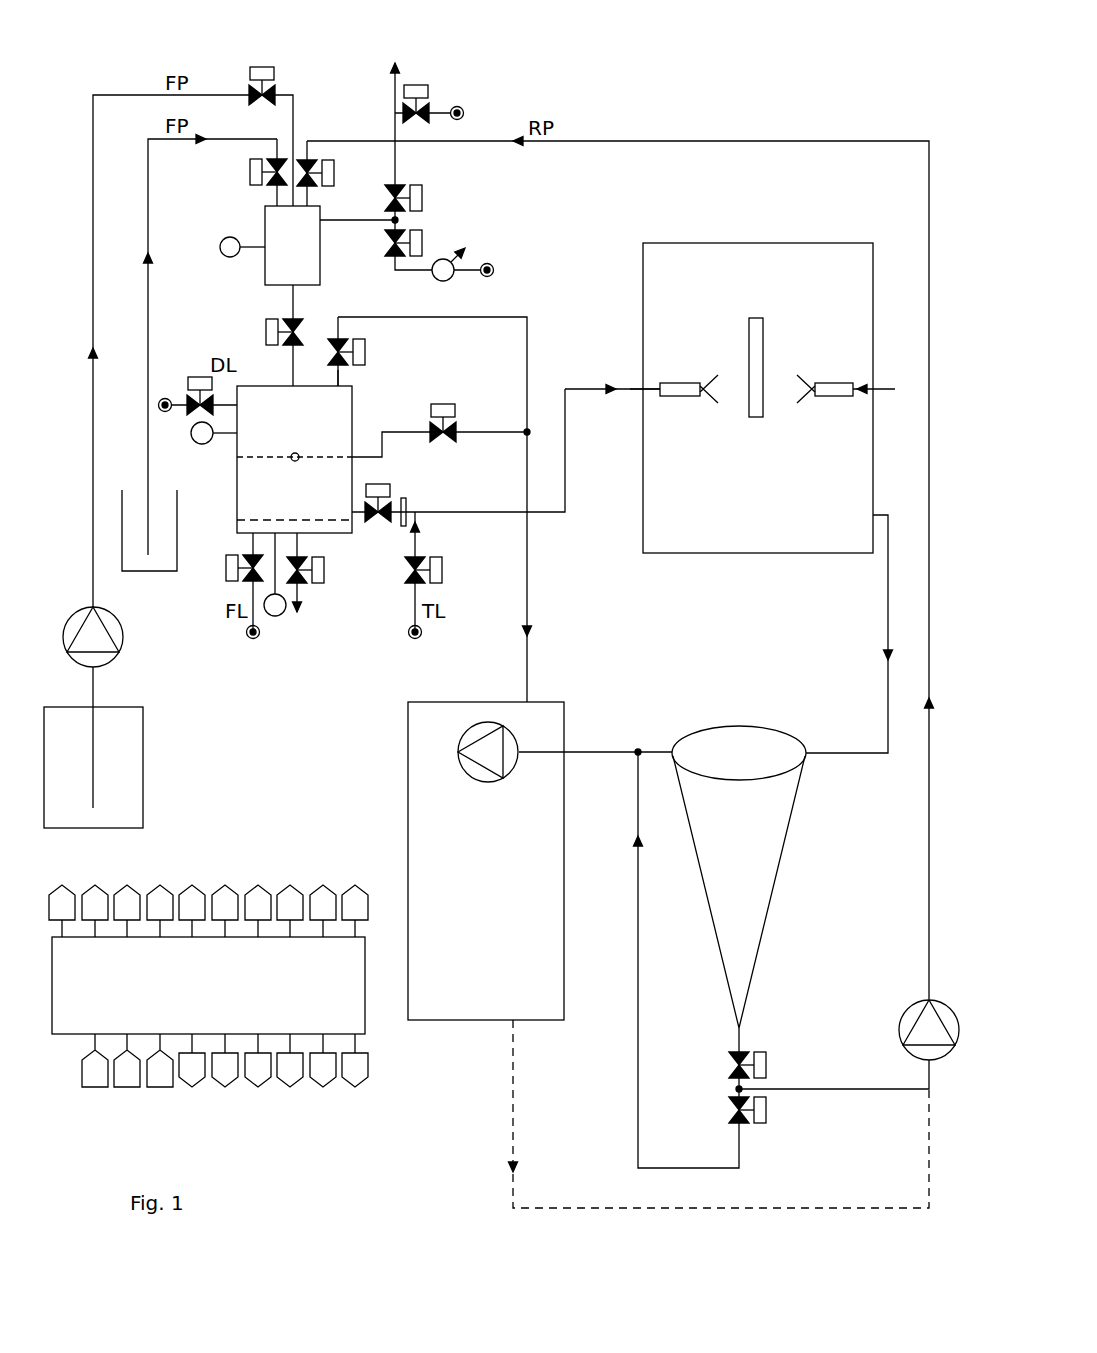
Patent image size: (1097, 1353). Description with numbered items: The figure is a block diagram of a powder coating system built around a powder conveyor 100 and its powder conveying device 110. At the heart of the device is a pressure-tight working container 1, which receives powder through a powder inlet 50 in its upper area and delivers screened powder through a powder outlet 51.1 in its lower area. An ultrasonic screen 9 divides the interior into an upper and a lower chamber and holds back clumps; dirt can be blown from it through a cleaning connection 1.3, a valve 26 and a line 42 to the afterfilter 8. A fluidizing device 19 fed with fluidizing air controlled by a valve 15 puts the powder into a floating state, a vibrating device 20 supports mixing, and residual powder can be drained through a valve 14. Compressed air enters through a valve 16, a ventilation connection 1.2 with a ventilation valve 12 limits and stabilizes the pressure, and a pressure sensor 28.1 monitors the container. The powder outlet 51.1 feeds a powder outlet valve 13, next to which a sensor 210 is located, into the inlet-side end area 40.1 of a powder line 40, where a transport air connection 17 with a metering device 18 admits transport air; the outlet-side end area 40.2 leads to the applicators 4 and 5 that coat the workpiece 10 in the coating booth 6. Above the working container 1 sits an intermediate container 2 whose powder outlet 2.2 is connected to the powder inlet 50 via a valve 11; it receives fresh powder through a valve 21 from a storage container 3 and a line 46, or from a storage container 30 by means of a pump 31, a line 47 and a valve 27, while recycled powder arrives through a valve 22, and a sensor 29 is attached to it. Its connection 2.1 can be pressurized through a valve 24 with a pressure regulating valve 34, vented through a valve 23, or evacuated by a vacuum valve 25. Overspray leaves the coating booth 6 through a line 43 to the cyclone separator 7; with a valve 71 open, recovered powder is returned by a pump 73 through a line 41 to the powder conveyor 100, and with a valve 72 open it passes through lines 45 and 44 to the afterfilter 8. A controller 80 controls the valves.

The working container 1 is at (355, 416).
The ventilation connection 1.2 is at (346, 384).
The cleaning connection 1.3 is at (356, 454).
The intermediate container 2 is at (264, 233).
The connection on the intermediate container 2.1 is at (323, 224).
The powder outlet of the intermediate container 2.2 is at (300, 291).
The storage container 3 is at (164, 574).
The applicator 4 is at (681, 382).
The applicator 5 is at (835, 382).
The coating booth 6 is at (712, 243).
The cyclone separator 7 is at (774, 894).
The afterfilter 8 is at (408, 838).
The ultrasonic screen 9 is at (240, 458).
The workpiece 10 is at (753, 318).
The valve 11 is at (265, 330).
The ventilation valve 12 is at (368, 356).
The outlet valve 13 is at (391, 485).
The valve 14 is at (326, 580).
The valve 15 is at (225, 567).
The valve 16 is at (196, 377).
The transport air connection 17 is at (412, 522).
The metering device for the transport air 18 is at (444, 581).
The fluidizing device 19 is at (236, 520).
The vibrating device 20 is at (283, 619).
The valve for fresh powder 21 is at (249, 173).
The valve 22 is at (336, 174).
The valve 23 is at (426, 199).
The valve 24 is at (426, 243).
The vacuum valve or negative pressure generator 25 is at (424, 86).
The valve 26 is at (445, 403).
The valve for fresh powder 27 is at (274, 72).
The pressure sensor 28.1 is at (192, 444).
The sensor 29 is at (222, 255).
The storage container 30 is at (144, 753).
The pump 31 is at (125, 648).
The pressure regulating valve 34 is at (452, 281).
The powder line 40 is at (598, 387).
The first end of the powder line 40.1 is at (415, 503).
The second end of the powder line 40.2 is at (648, 381).
The line 41 is at (652, 140).
The line 42 is at (528, 593).
The line 43 is at (858, 753).
The line 44 is at (585, 752).
The line 45 is at (637, 922).
The line 46 is at (147, 292).
The line 47 is at (92, 333).
The powder inlet 50 is at (283, 396).
The powder outlet 51.1 is at (336, 522).
The valve 71 is at (770, 1065).
The valve 72 is at (770, 1113).
The pump 73 is at (900, 1027).
The controller 80 is at (208, 986).
The powder conveyor 100 is at (228, 342).
The powder conveying device 110 is at (514, 243).
The sensor 210 is at (398, 535).